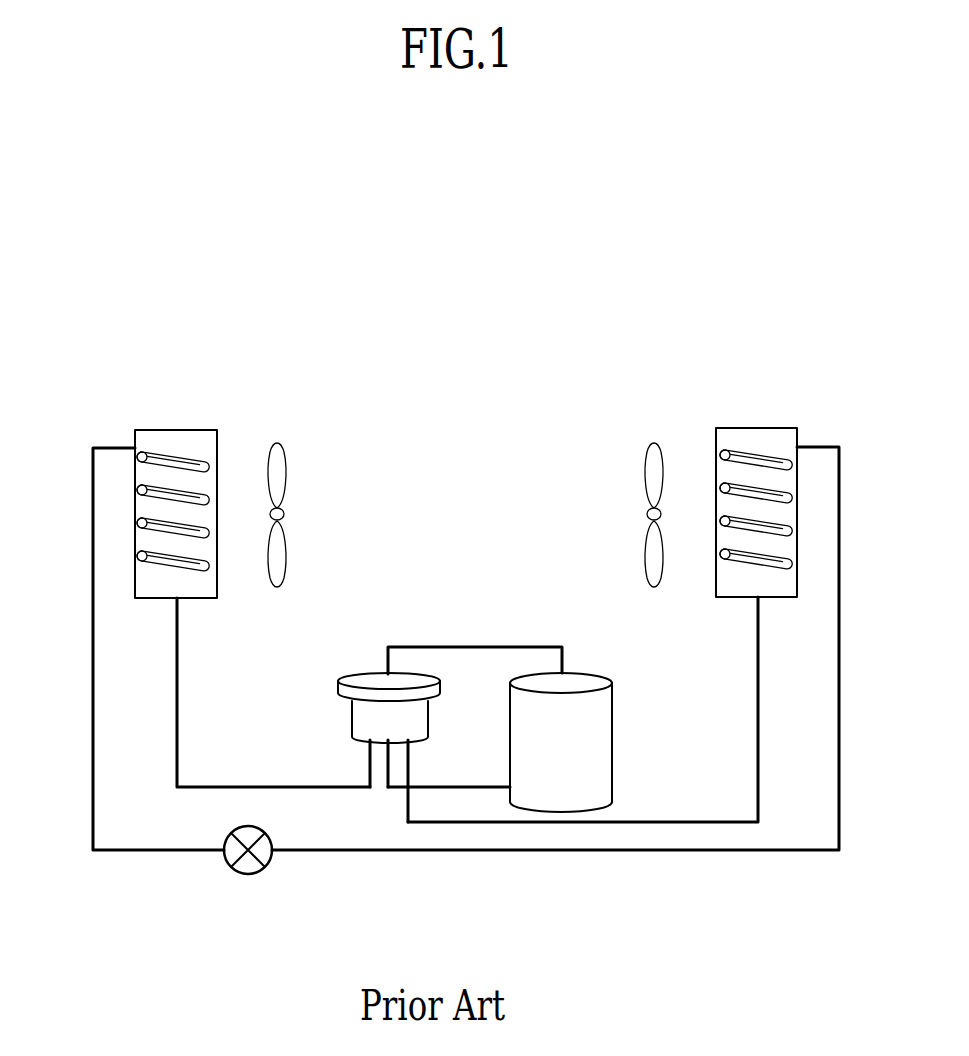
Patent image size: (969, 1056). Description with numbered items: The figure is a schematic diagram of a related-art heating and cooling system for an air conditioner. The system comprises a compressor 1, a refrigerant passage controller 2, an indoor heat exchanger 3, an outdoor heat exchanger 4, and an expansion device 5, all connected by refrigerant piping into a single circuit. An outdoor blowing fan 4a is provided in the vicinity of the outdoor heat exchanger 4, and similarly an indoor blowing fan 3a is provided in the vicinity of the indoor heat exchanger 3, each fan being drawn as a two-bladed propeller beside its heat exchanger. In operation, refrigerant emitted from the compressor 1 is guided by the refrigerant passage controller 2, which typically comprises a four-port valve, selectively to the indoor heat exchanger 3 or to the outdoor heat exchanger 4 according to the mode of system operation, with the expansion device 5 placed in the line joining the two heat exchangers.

The compressor 1 is at (600, 767).
The refrigerant passage controller 2 is at (361, 716).
The indoor heat exchanger 3 is at (766, 426).
The indoor blowing fan 3a is at (652, 558).
The outdoor heat exchanger 4 is at (168, 428).
The outdoor blowing fan 4a is at (279, 566).
The expansion device 5 is at (249, 875).